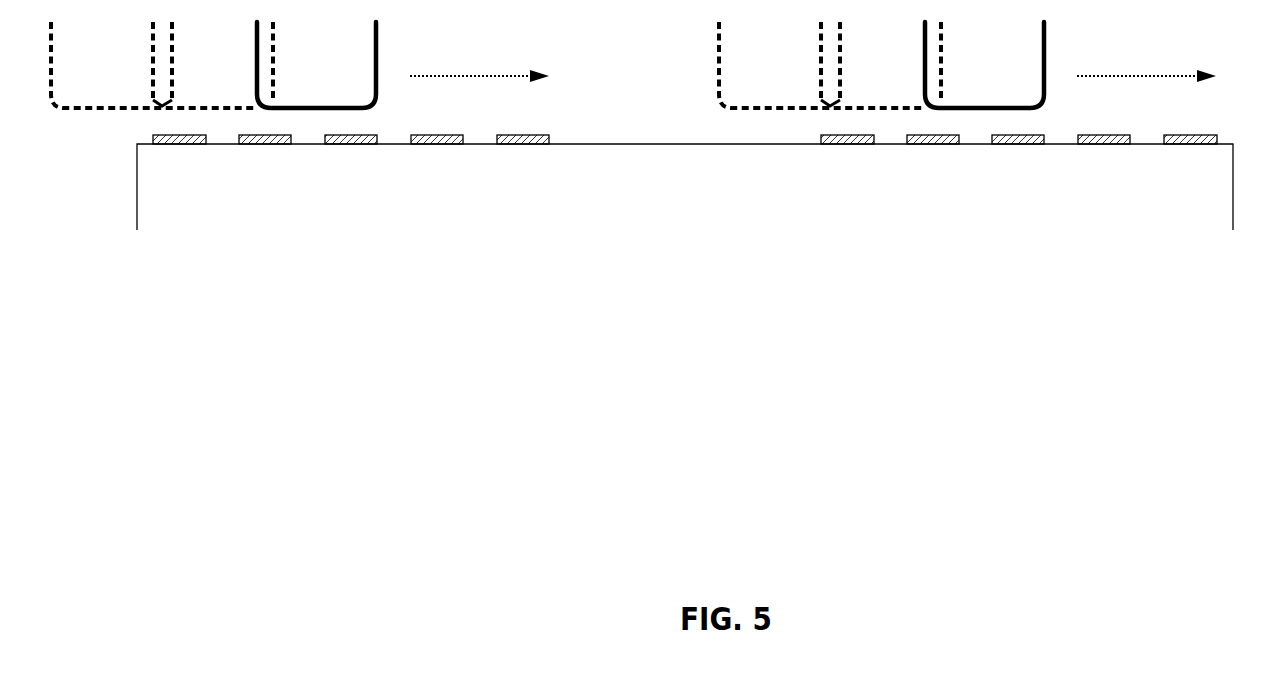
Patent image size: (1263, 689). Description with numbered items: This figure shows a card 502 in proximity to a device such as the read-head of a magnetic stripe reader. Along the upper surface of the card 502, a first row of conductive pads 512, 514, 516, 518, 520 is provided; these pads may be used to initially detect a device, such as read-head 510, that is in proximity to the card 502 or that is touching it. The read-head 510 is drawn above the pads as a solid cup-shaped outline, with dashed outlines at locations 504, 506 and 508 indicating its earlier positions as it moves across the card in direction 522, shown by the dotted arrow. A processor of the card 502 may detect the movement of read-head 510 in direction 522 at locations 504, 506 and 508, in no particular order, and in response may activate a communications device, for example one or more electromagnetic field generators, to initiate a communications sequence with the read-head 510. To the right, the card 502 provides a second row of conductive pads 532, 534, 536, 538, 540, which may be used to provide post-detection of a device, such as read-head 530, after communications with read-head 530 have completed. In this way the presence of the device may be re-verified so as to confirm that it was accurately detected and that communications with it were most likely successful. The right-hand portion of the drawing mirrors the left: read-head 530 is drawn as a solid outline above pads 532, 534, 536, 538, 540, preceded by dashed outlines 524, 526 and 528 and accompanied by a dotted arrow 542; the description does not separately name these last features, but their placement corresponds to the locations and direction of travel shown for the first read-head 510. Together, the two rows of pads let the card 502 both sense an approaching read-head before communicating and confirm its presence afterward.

The card 502 is at (710, 214).
The location 504 is at (65, 87).
The location 506 is at (202, 42).
The location 508 is at (328, 42).
The read-head 510 is at (256, 44).
The conductive pad 512 is at (158, 136).
The conductive pad 514 is at (244, 136).
The conductive pad 516 is at (333, 136).
The conductive pad 518 is at (418, 136).
The conductive pad 520 is at (504, 136).
The direction 522 is at (428, 76).
The first dispensing nozzle path (second assembly) 524 is at (733, 87).
The second dispensing nozzle (second assembly) 526 is at (870, 42).
The third dispensing nozzle (second assembly) 528 is at (996, 42).
The read-head 530 is at (924, 44).
The conductive pad 532 is at (826, 136).
The conductive pad 534 is at (912, 136).
The conductive pad 536 is at (1000, 136).
The conductive pad 538 is at (1085, 136).
The conductive pad 540 is at (1171, 136).
The direction of travel (second assembly) 542 is at (1095, 76).